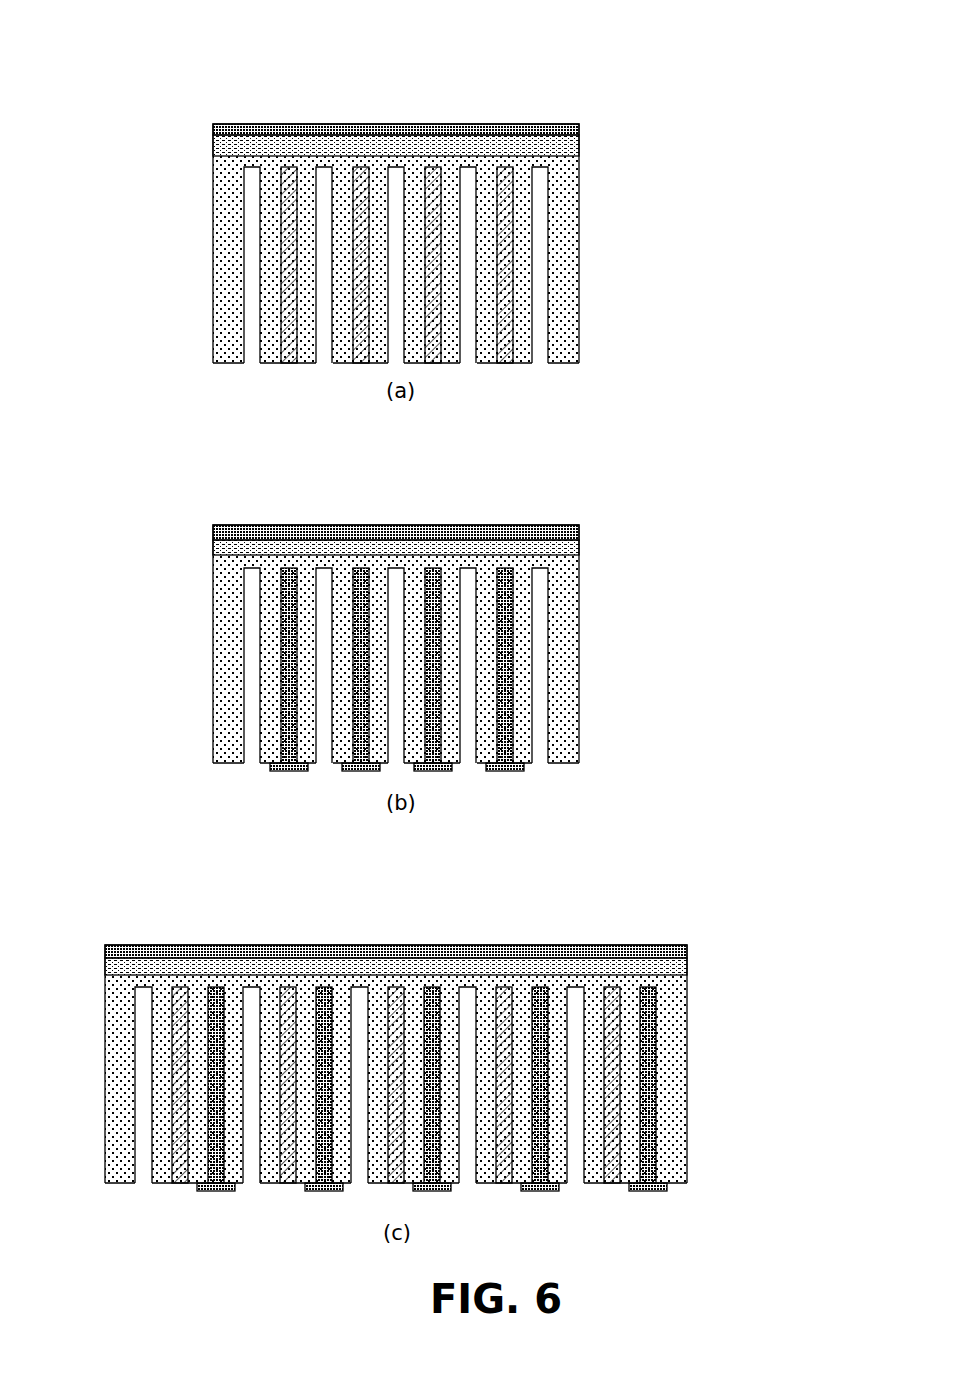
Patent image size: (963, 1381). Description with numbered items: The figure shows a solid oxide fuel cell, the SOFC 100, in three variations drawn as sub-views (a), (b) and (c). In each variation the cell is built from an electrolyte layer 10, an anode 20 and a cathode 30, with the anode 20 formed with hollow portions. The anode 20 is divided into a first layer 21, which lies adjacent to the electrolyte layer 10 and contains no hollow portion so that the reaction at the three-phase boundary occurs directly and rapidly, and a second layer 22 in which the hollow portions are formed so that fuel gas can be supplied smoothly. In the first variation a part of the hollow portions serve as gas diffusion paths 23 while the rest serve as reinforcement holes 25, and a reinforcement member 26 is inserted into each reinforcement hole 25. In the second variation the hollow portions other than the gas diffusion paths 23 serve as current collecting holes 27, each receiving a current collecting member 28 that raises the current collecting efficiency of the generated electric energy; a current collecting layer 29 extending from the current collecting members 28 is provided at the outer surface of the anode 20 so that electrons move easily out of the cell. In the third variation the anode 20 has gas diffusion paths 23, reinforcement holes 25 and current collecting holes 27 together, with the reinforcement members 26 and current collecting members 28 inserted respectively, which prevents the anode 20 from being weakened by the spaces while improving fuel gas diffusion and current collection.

The SOFC 100 is at (227, 72).
The electrolyte layer 10 is at (213, 140).
The cathode 30 is at (495, 124).
The anode 20 is at (657, 158).
The first layer 21 is at (579, 156).
The second layer 22 is at (585, 363).
The gas diffusion paths 23 is at (252, 325).
The reinforcement holes 25 is at (282, 222).
The reinforcement members 26 is at (283, 275).
The current collecting holes 27 is at (282, 692).
The current collecting members 28 is at (282, 645).
The current collecting layer 29 is at (270, 770).